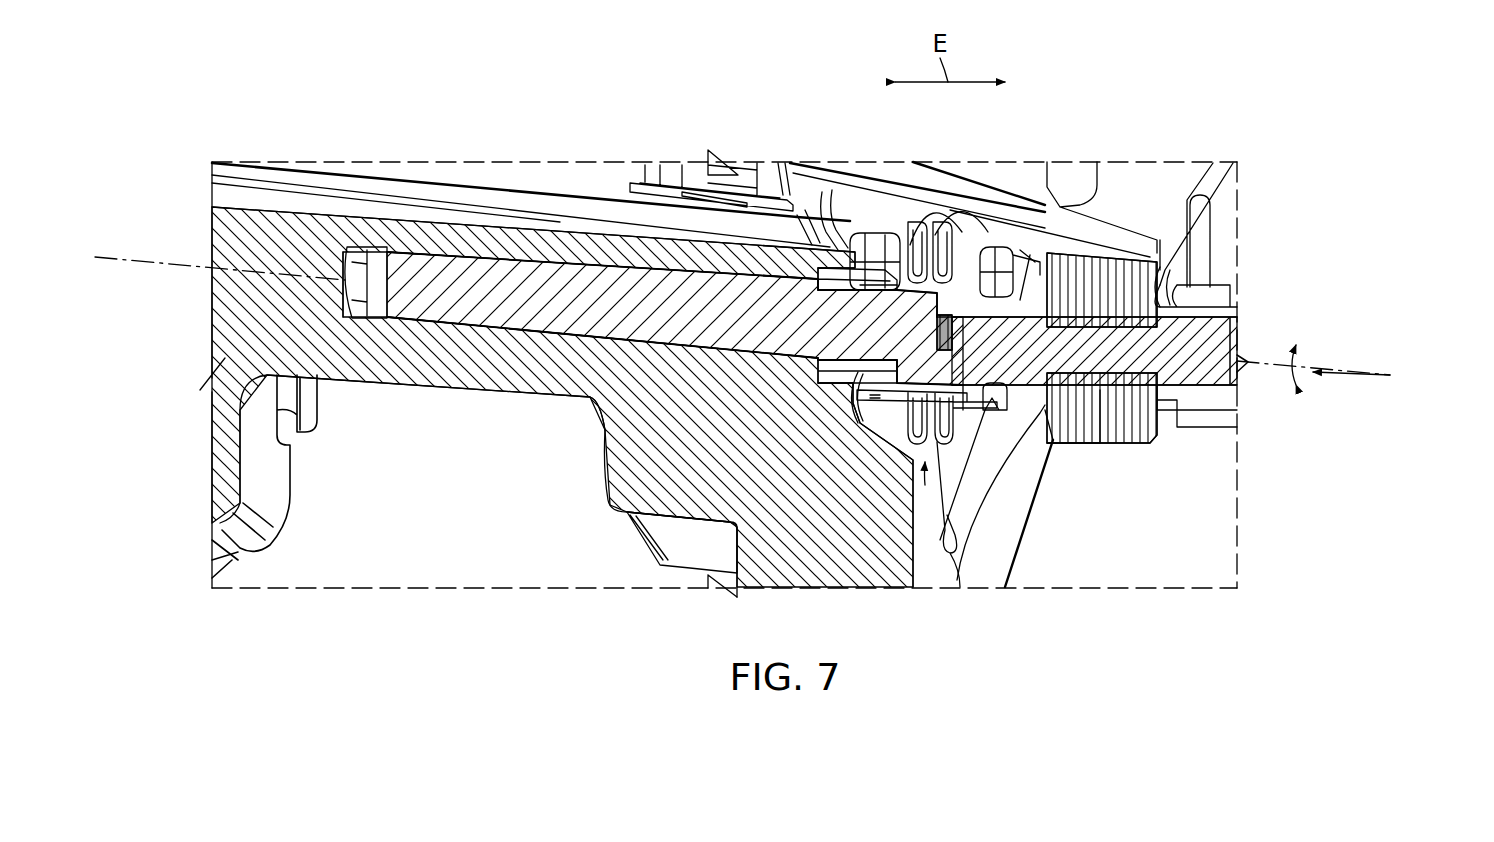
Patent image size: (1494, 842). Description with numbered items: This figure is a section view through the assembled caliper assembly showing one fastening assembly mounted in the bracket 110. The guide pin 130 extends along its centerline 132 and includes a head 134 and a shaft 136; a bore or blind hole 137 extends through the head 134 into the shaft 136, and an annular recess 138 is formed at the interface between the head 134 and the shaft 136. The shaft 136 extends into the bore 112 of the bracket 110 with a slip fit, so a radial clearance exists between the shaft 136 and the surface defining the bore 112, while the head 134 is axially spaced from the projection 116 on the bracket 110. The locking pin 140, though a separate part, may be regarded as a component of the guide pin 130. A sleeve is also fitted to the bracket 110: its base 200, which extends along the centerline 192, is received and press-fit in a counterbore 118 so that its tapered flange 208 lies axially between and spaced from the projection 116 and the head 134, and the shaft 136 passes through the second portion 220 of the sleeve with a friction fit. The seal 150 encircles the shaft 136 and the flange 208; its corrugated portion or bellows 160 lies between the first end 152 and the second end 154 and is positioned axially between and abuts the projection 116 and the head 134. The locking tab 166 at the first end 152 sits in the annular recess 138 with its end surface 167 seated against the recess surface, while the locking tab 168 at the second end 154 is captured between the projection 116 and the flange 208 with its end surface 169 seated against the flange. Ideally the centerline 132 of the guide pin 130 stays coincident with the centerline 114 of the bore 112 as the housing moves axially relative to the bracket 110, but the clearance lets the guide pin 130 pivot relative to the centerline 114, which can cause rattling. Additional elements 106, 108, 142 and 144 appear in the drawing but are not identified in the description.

The cover 106 is at (1143, 177).
The clamp block 108 is at (1107, 322).
The bracket 110 is at (505, 388).
The bore 112 is at (620, 348).
The centerline 114 is at (1293, 353).
The projection 116 is at (825, 215).
The counterbore 118 is at (853, 387).
The guide pin 130 is at (563, 285).
The centerline 132 is at (1295, 380).
The head 134 is at (1030, 255).
The shaft 136 is at (463, 273).
The bore or blind hole 137 is at (933, 332).
The annular recess 138 is at (1003, 375).
The locking pin 140 is at (1243, 277).
The rod tip 142 is at (1220, 333).
The lower clamp 144 is at (1107, 378).
The seal 150 is at (947, 530).
The first end 152 is at (997, 217).
The second end 154 is at (877, 217).
The corrugated portion or bellows 160 is at (923, 210).
The locking tab 166 is at (1000, 377).
The end surface 167 is at (1037, 440).
The locking tab 168 is at (855, 398).
The end surface 169 is at (880, 387).
The centerline 192 is at (1355, 375).
The base 200 is at (818, 287).
The flange 208 is at (877, 367).
The second portion 220 is at (830, 378).